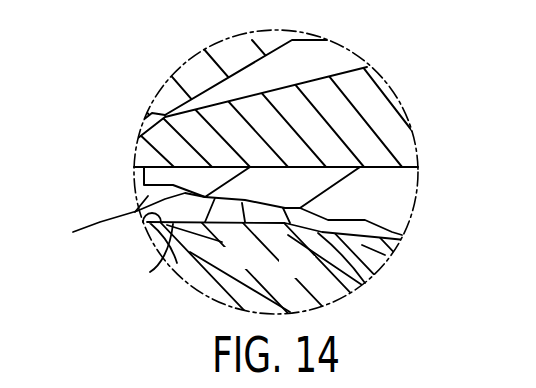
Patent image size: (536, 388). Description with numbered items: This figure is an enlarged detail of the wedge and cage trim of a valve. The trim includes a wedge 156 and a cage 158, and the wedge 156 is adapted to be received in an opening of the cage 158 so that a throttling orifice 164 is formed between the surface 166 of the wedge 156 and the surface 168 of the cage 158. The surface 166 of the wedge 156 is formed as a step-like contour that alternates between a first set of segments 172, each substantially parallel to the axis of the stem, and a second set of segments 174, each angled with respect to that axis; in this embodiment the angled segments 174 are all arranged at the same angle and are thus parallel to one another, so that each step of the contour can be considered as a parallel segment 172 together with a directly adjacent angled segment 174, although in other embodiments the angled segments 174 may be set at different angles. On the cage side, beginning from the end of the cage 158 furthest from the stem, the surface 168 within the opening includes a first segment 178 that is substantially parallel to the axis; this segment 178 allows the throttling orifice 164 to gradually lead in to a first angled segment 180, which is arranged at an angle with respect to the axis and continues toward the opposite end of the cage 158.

The wedge 156 is at (395, 190).
The cage 158 is at (383, 102).
The throttling orifice 164 is at (406, 242).
The surface of the wedge 166 is at (143, 205).
The surface of the cage 168 is at (143, 226).
The first set of segments 172 is at (288, 224).
The second set of segments 174 is at (238, 247).
The first segment 178 is at (150, 272).
The first angled segment 180 is at (365, 284).